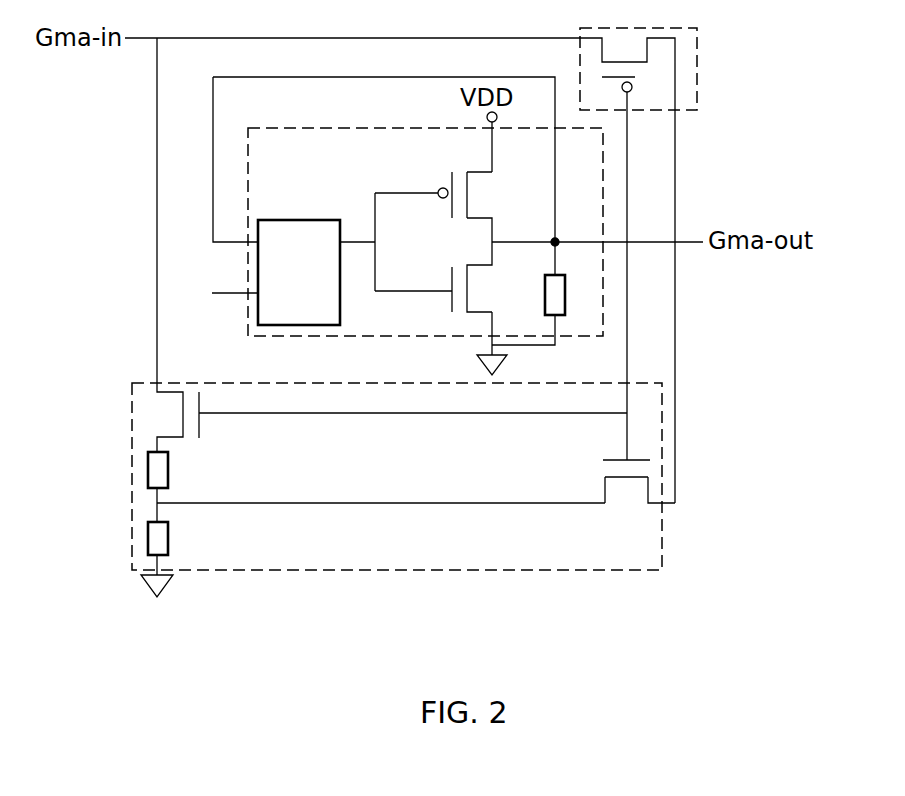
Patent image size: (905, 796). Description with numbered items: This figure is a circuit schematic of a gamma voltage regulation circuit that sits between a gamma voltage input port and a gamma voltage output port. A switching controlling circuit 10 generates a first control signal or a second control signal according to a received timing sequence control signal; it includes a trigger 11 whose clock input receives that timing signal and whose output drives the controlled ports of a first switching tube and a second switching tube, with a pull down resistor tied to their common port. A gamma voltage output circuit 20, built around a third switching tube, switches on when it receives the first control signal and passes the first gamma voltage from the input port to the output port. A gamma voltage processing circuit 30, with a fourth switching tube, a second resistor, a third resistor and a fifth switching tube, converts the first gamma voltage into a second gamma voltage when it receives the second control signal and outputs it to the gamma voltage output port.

The switching controlling circuit 10 is at (307, 128).
The trigger 11 is at (270, 220).
The gamma voltage output circuit 20 is at (699, 72).
The gamma voltage processing circuit 30 is at (662, 417).